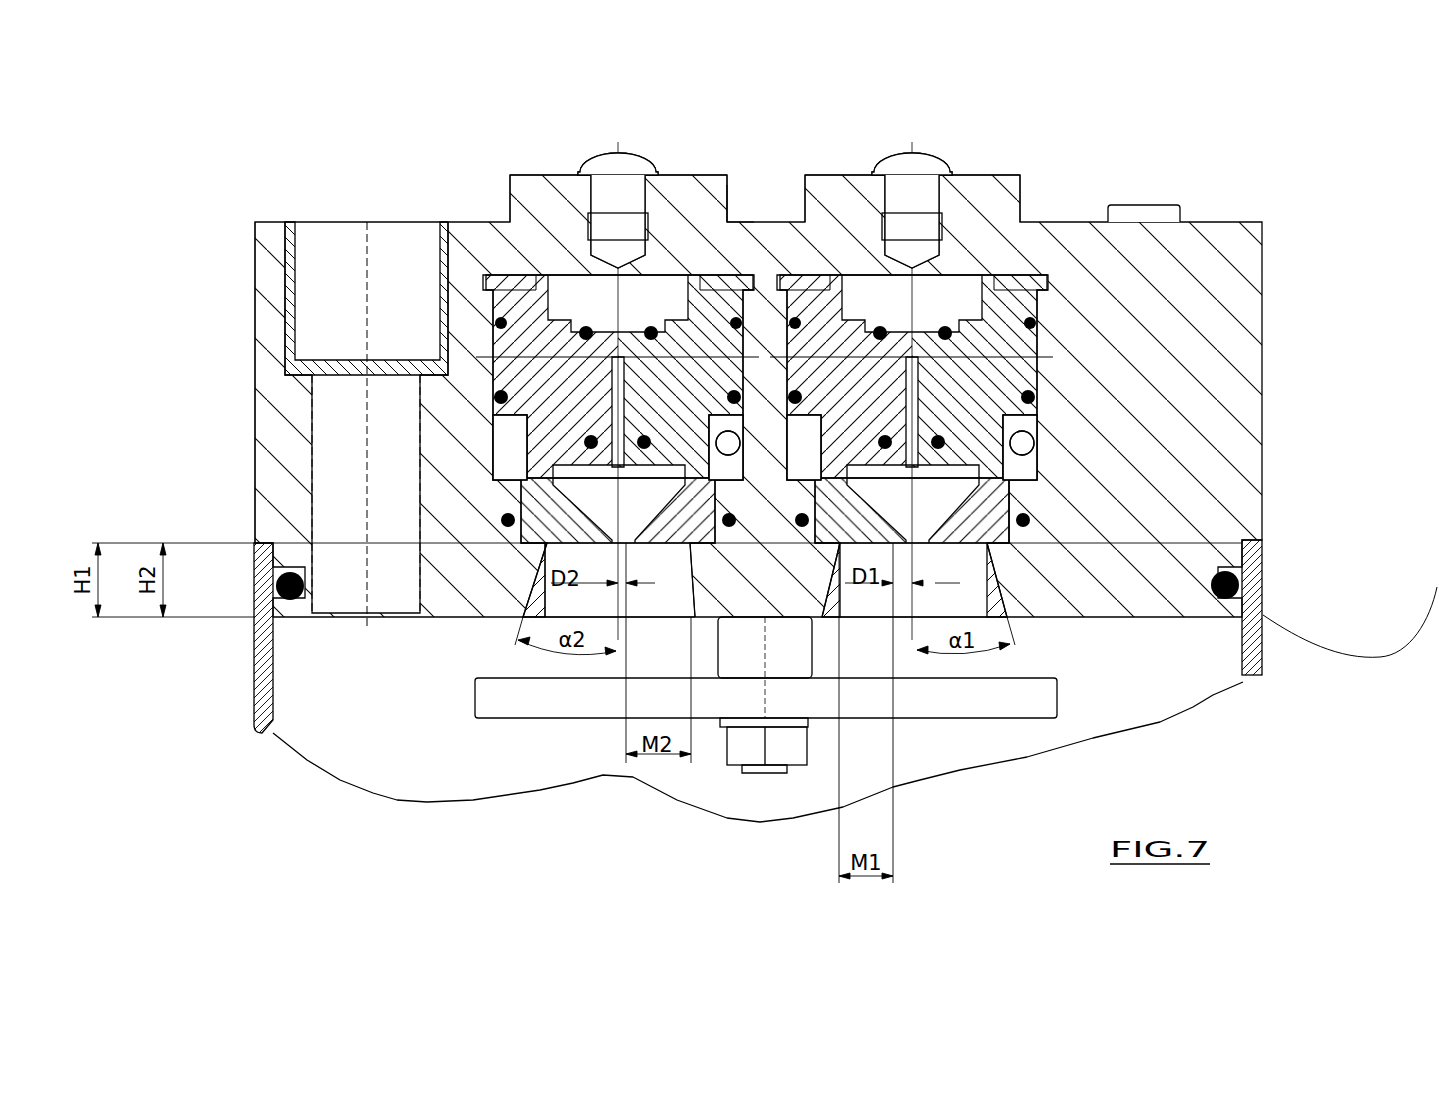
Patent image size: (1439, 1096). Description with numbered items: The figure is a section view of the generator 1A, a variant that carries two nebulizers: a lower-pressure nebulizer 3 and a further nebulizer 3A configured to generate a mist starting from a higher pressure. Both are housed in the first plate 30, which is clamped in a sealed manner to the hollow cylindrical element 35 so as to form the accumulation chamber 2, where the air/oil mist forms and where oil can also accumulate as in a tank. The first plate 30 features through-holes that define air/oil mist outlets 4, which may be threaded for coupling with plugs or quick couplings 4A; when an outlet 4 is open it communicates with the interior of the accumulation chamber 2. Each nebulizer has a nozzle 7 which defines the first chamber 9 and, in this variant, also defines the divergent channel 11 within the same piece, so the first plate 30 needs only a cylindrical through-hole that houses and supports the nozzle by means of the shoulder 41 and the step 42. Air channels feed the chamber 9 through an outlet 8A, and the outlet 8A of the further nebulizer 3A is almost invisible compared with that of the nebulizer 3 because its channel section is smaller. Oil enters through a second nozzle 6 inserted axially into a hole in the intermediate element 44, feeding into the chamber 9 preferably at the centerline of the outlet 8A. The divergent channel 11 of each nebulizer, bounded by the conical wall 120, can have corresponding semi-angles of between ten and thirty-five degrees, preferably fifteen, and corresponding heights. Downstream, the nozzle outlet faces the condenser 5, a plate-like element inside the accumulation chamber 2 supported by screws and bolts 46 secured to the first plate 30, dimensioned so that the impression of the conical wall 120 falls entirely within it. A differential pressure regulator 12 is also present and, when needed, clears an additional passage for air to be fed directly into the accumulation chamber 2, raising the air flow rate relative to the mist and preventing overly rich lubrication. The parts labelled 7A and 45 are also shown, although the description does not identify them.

The generator 1A is at (1266, 196).
The accumulation chamber 2 is at (397, 767).
The nebulizer 3 is at (1031, 198).
The further nebulizer 3A is at (741, 183).
The air/oil mist outlet 4 is at (362, 445).
The plug or quick coupling 4A is at (310, 218).
The condenser 5 is at (882, 705).
The second nozzle 6 is at (719, 182).
The nozzle 7 is at (1012, 548).
The valve seat 7A is at (517, 548).
The outlet 8A is at (640, 470).
The first chamber 9 is at (1010, 477).
The divergent channel 11 is at (652, 608).
The differential pressure regulator 12 is at (828, 615).
The first plate 30 is at (292, 448).
The hollow cylindrical element 35 is at (1262, 665).
The shoulder 41 is at (1073, 563).
The step 42 is at (1040, 495).
The intermediate element 44 is at (697, 182).
The plug block 45 is at (675, 182).
The screws and bolts 46 is at (762, 745).
The conical wall 120 is at (706, 617).